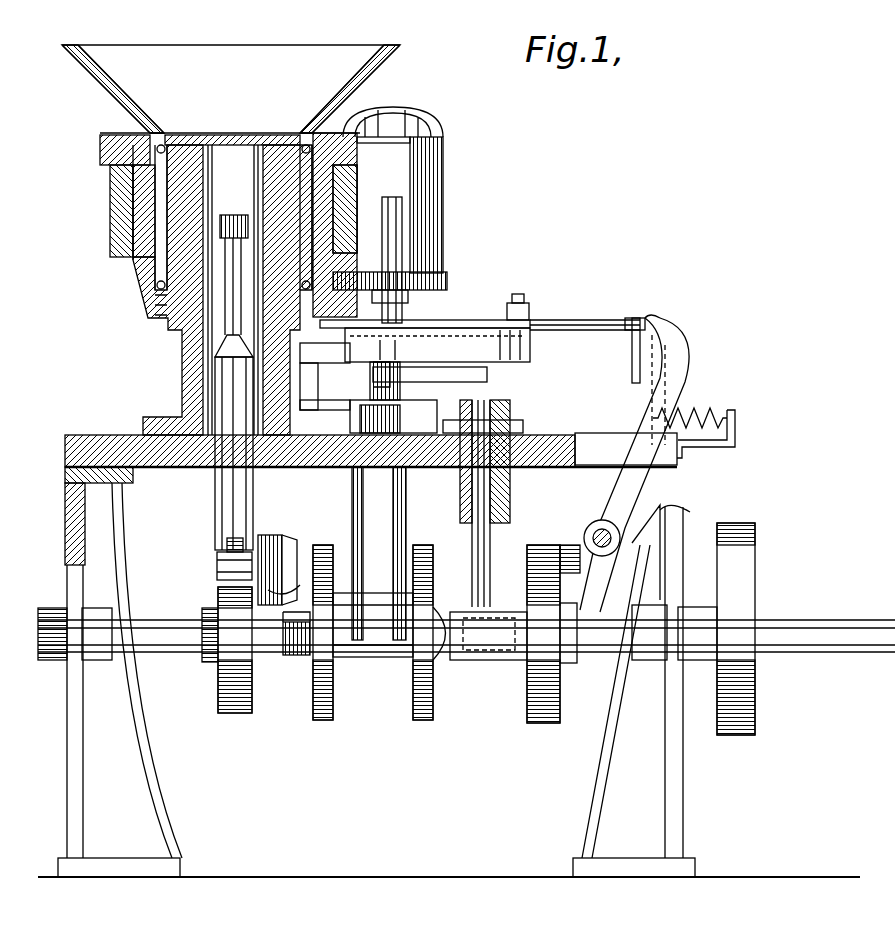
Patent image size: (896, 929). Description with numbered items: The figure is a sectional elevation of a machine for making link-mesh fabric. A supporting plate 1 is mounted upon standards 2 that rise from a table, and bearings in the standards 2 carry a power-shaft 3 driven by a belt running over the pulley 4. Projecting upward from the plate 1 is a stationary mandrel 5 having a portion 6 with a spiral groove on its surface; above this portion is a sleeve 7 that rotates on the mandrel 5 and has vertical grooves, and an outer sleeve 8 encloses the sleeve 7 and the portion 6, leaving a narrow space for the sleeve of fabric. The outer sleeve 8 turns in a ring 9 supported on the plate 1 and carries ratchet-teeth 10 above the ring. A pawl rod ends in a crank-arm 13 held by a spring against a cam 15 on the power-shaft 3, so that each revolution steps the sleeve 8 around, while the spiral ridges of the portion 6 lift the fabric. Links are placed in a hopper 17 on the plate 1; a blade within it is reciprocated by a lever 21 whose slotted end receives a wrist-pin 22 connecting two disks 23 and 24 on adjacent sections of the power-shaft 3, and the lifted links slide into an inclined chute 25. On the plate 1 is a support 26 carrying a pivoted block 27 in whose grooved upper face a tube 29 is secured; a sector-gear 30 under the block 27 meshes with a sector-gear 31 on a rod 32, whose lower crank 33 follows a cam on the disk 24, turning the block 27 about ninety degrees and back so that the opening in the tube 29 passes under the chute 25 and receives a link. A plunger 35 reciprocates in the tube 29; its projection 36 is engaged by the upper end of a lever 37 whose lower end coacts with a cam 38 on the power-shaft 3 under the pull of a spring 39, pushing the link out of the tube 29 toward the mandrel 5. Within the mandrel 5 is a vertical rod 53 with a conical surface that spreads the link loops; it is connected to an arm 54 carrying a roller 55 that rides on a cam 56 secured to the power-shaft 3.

The supporting plate 1 is at (87, 433).
The standards 2 is at (140, 748).
The power-shaft 3 is at (163, 620).
The pulley 4 is at (745, 615).
The stationary mandrel 5 is at (183, 367).
The spirally grooved portion 6 is at (162, 318).
The inner sleeve 7 is at (165, 152).
The outer sleeve 8 is at (135, 200).
The ring 9 is at (112, 232).
The ratchet-teeth 10 is at (100, 148).
The crank-arm 13 is at (295, 640).
The cam 15 is at (312, 565).
The hopper 17 is at (418, 165).
The lever 21 is at (392, 650).
The wrist-pin 22 is at (362, 590).
The disk 23 is at (322, 720).
The disk 24 is at (425, 720).
The chute 25 is at (398, 212).
The support 26 is at (368, 390).
The block 27 is at (437, 345).
The tube 29 is at (445, 322).
The sector-gear 30 is at (376, 367).
The sector-gear 31 is at (455, 375).
The rod 32 is at (478, 540).
The crank 33 is at (455, 650).
The plunger 35 is at (557, 322).
The projection 36 is at (632, 372).
The lever 37 is at (660, 405).
The cam 38 is at (540, 720).
The spring 39 is at (728, 410).
The rod 53 is at (250, 500).
The arm 54 is at (217, 560).
The roller 55 is at (228, 548).
The cam 56 is at (218, 683).